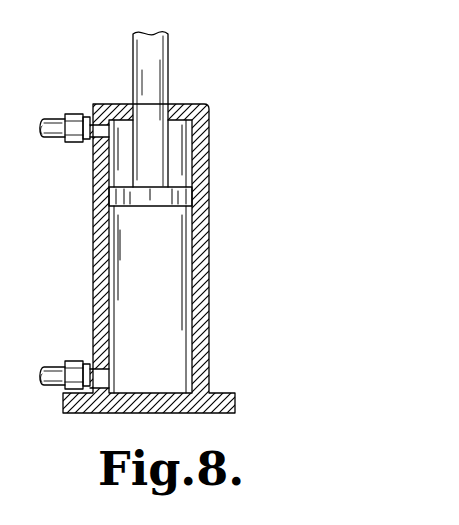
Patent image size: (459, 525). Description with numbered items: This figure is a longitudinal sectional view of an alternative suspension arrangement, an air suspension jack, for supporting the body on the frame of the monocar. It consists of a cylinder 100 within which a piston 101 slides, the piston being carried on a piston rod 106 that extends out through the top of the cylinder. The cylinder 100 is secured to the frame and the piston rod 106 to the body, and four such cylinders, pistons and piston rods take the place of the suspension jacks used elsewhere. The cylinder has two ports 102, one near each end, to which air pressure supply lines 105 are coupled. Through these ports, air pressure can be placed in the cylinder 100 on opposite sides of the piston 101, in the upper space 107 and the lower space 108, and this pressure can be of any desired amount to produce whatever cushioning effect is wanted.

The cylinder 100 is at (200, 238).
The piston 101 is at (160, 207).
The ports 102 is at (100, 126).
The air pressure supply lines 105 is at (53, 140).
The piston rod 106 is at (155, 60).
The cylinder space on one side of the piston 107 is at (178, 146).
The cylinder space on the opposite side of the piston 108 is at (171, 343).